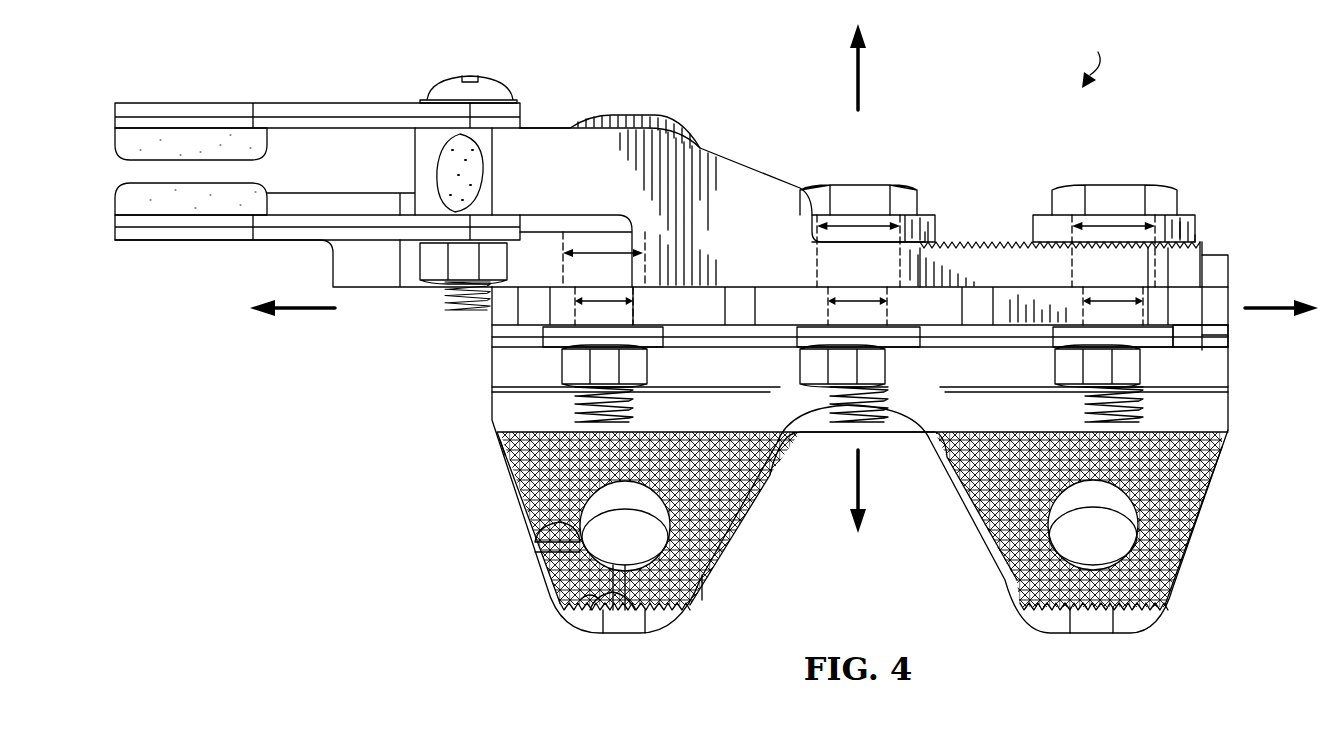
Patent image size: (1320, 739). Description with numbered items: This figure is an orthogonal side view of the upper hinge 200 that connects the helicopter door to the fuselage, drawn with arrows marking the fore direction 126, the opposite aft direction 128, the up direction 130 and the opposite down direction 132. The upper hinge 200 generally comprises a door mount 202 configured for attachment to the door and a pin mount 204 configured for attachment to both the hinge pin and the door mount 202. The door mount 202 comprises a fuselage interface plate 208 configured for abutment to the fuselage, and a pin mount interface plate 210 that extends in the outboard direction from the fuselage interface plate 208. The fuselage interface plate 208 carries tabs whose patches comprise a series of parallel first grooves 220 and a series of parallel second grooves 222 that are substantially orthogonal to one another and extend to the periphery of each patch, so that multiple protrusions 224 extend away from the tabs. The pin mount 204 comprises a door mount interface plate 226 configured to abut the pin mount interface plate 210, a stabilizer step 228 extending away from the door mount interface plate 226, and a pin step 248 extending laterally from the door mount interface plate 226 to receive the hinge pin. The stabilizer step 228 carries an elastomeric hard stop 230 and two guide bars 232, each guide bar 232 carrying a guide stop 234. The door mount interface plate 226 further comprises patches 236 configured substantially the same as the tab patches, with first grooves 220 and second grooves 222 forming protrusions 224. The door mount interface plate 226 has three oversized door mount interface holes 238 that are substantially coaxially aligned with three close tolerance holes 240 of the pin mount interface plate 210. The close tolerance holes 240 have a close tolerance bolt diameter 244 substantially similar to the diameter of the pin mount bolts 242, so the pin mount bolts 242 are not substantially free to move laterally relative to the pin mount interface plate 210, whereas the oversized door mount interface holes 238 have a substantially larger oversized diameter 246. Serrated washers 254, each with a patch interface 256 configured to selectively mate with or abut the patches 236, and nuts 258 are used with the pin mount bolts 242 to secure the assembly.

The upper hinge 200 is at (1098, 59).
The door mount 202 is at (1230, 418).
The pin mount 204 is at (1003, 295).
The fuselage interface plate 208 is at (1212, 315).
The pin mount interface plate 210 is at (805, 432).
The first grooves 220 is at (585, 605).
The second grooves 222 is at (548, 530).
The protrusions 224 is at (510, 455).
The door mount interface plate 226 is at (1235, 262).
The stabilizer step 228 is at (548, 140).
The elastomeric hard stop 230 is at (440, 160).
The guide bars 232 is at (316, 103).
The guide stop 234 is at (122, 140).
The patches 236 is at (950, 245).
The oversized door mount interface holes 238 is at (575, 232).
The close tolerance holes 240 is at (520, 310).
The pin mount bolts 242 is at (830, 185).
The close tolerance bolt diameter 244 is at (550, 345).
The oversized diameter 246 is at (600, 252).
The pin step 248 is at (370, 280).
The serrated washers 254 is at (920, 232).
The patch interface 256 is at (1178, 240).
The nuts 258 is at (648, 362).
The fore direction 126 is at (297, 312).
The aft direction 128 is at (1275, 308).
The up direction 130 is at (860, 68).
The down direction 132 is at (860, 483).